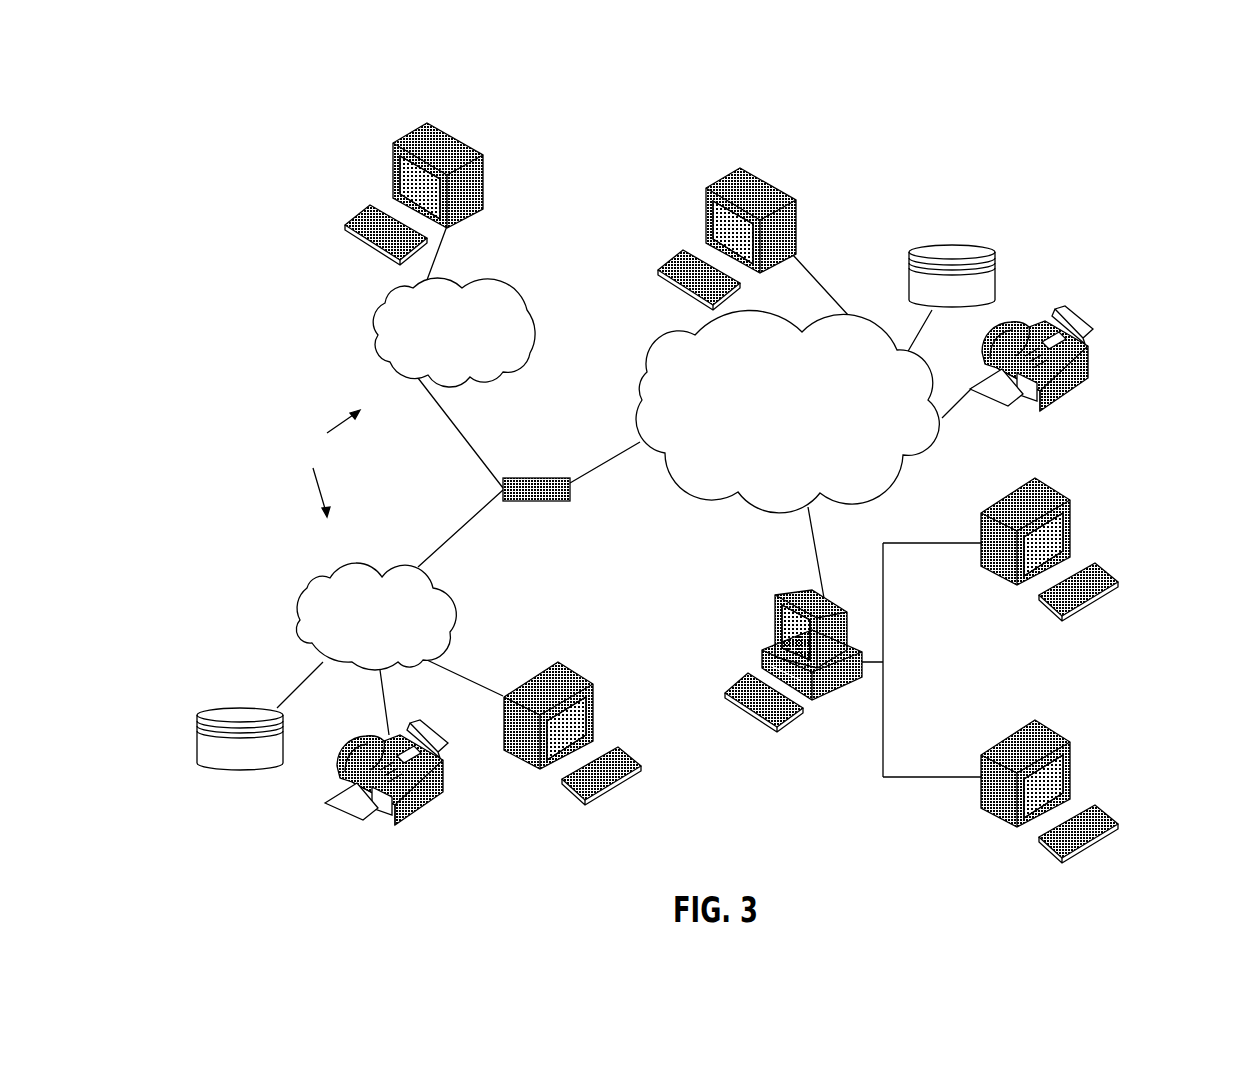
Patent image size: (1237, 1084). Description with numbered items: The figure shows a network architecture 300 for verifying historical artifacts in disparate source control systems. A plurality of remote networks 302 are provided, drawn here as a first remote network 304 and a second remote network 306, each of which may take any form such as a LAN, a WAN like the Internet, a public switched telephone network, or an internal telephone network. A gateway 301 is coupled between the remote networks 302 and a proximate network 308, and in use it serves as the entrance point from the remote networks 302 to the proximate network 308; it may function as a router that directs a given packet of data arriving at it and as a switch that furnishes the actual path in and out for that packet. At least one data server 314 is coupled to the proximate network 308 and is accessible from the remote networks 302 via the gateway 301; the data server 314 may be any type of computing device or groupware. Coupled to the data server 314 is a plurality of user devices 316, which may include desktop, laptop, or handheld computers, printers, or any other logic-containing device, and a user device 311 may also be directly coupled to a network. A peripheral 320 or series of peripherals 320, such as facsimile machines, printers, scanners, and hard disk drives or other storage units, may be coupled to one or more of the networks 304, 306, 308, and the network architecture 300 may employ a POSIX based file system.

The network architecture 300 is at (718, 93).
The gateway 301 is at (535, 477).
The remote networks 302 is at (324, 463).
The first remote network 304 is at (300, 593).
The second remote network 306 is at (537, 340).
The proximate network 308 is at (907, 472).
The user device 311 is at (797, 232).
The data server 314 is at (773, 620).
The user devices 316 is at (483, 182).
The peripheral 320 is at (952, 243).